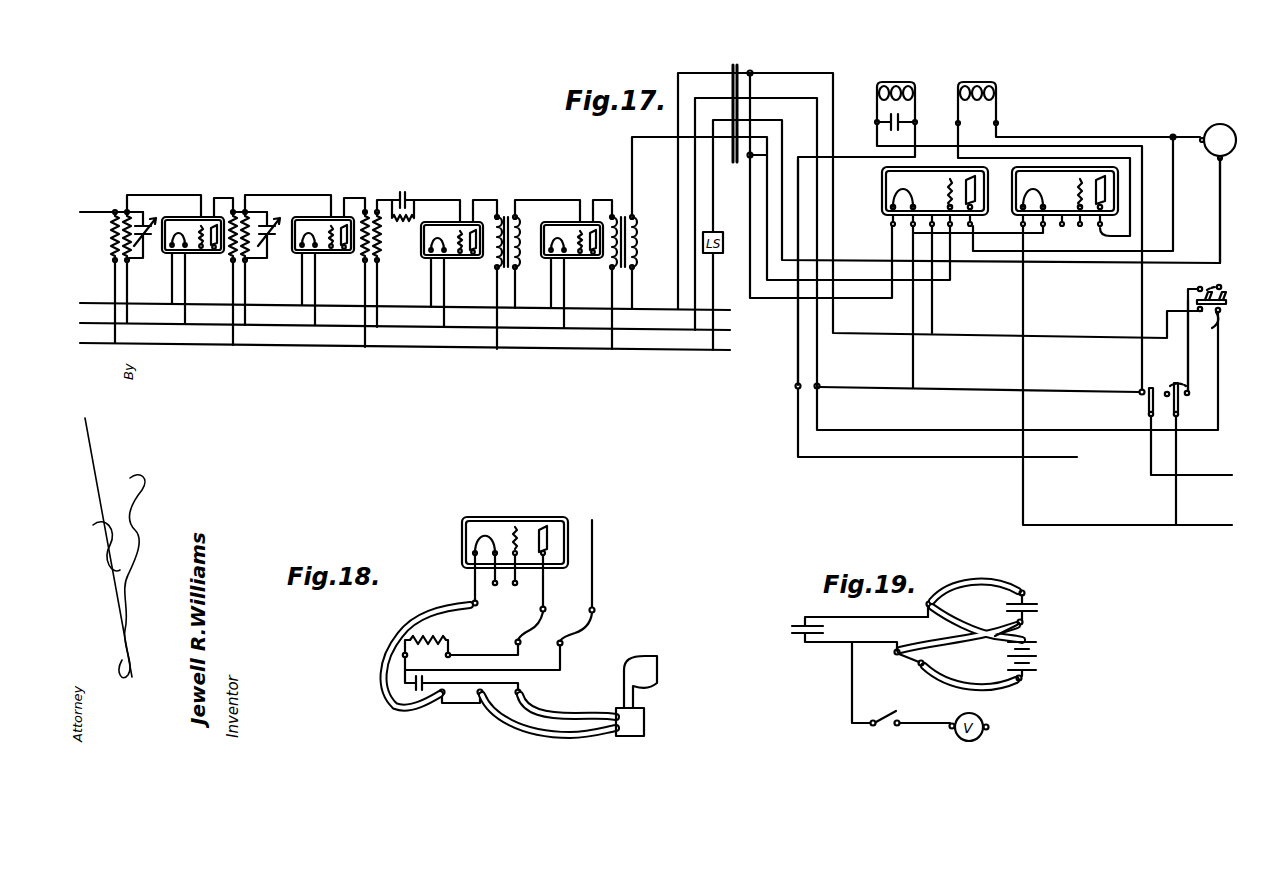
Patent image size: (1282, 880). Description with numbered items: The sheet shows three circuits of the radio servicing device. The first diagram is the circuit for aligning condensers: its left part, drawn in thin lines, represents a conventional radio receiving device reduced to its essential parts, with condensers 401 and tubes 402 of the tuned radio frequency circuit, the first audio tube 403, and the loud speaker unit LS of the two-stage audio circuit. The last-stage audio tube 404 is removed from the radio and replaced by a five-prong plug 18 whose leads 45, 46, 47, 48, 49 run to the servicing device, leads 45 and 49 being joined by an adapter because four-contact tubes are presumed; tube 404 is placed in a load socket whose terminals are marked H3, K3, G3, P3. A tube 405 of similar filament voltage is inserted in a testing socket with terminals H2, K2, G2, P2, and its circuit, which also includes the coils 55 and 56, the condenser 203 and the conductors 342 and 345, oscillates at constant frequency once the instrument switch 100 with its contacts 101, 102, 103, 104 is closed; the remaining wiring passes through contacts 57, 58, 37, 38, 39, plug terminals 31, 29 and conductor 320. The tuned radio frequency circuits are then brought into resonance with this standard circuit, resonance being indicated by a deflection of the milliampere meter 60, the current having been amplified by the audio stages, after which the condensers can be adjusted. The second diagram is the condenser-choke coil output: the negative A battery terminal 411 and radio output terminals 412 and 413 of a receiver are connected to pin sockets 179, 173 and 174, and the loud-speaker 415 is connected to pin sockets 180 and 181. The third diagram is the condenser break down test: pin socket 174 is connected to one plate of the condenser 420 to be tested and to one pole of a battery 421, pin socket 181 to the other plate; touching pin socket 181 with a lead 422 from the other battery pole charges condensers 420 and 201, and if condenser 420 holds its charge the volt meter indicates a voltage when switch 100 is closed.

In FIG. 17, the condensers 401 is at (145, 224).
In FIG. 17, the tubes 402 is at (201, 215).
In FIG. 17, the first tube of the audio circuit 403 is at (556, 222).
In FIG. 17, the tube of the second or last audio stage 404 is at (917, 191).
In FIG. 17, the tube 405 is at (1040, 167).
In FIG. 17, the five-prong plug 18 is at (750, 70).
In FIG. 17, the lead 45 is at (748, 160).
In FIG. 17, the lead 46 is at (770, 160).
In FIG. 17, the lead 47 is at (762, 135).
In FIG. 17, the lead 48 is at (790, 98).
In FIG. 17, the lead 49 is at (820, 85).
In FIG. 17, the relay coil 55 is at (896, 82).
In FIG. 17, the relay coil 56 is at (977, 82).
In FIG. 17, the condenser 203 is at (896, 115).
In FIG. 17, the conductor 345 is at (1075, 137).
In FIG. 17, the milliampere meter 60 is at (1230, 127).
In FIG. 17, the conductor 342 is at (797, 353).
In FIG. 17, the contact 57 is at (795, 389).
In FIG. 17, the contact 58 is at (820, 385).
In FIG. 17, the contact 37 is at (1140, 390).
In FIG. 17, the contact 38 is at (1167, 391).
In FIG. 17, the contact 39 is at (1189, 390).
In FIG. 17, the plug terminal 31 is at (1148, 402).
In FIG. 17, the plug terminal 29 is at (1180, 410).
In FIG. 17, the instrument switch 100 is at (1223, 318).
In FIG. 19, the instrument switch 100 is at (885, 717).
In FIG. 17, the switch contact 101 is at (1196, 289).
In FIG. 17, the switch contact 102 is at (1168, 321).
In FIG. 17, the switch contact 103 is at (1221, 287).
In FIG. 17, the switch contact 104 is at (1222, 310).
In FIG. 17, the conductor 320 is at (1190, 350).
In FIG. 17, the heater terminal H3 is at (892, 228).
In FIG. 17, the cathode terminal K3 is at (925, 237).
In FIG. 17, the grid terminal G3 is at (958, 238).
In FIG. 17, the plate terminal P3 is at (974, 224).
In FIG. 17, the heater terminal H2 is at (1022, 228).
In FIG. 17, the cathode terminal K2 is at (1062, 228).
In FIG. 17, the grid terminal G2 is at (1081, 228).
In FIG. 17, the plate terminal P2 is at (1112, 240).
In FIG. 18, the negative A battery terminal 411 is at (470, 602).
In FIG. 18, the radio output terminal 412 is at (546, 608).
In FIG. 18, the radio output terminal 413 is at (596, 610).
In FIG. 18, the pin socket 173 is at (516, 641).
In FIG. 18, the pin socket 174 is at (562, 645).
In FIG. 19, the pin socket 174 is at (931, 600).
In FIG. 18, the pin socket 179 is at (441, 696).
In FIG. 18, the pin socket 180 is at (481, 696).
In FIG. 18, the pin socket 181 is at (521, 693).
In FIG. 19, the pin socket 181 is at (895, 657).
In FIG. 18, the loud-speaker 415 is at (646, 721).
In FIG. 19, the condenser 201 is at (804, 620).
In FIG. 19, the condenser to be tested 420 is at (1036, 606).
In FIG. 19, the battery 421 is at (1012, 662).
In FIG. 19, the lead 422 is at (923, 668).